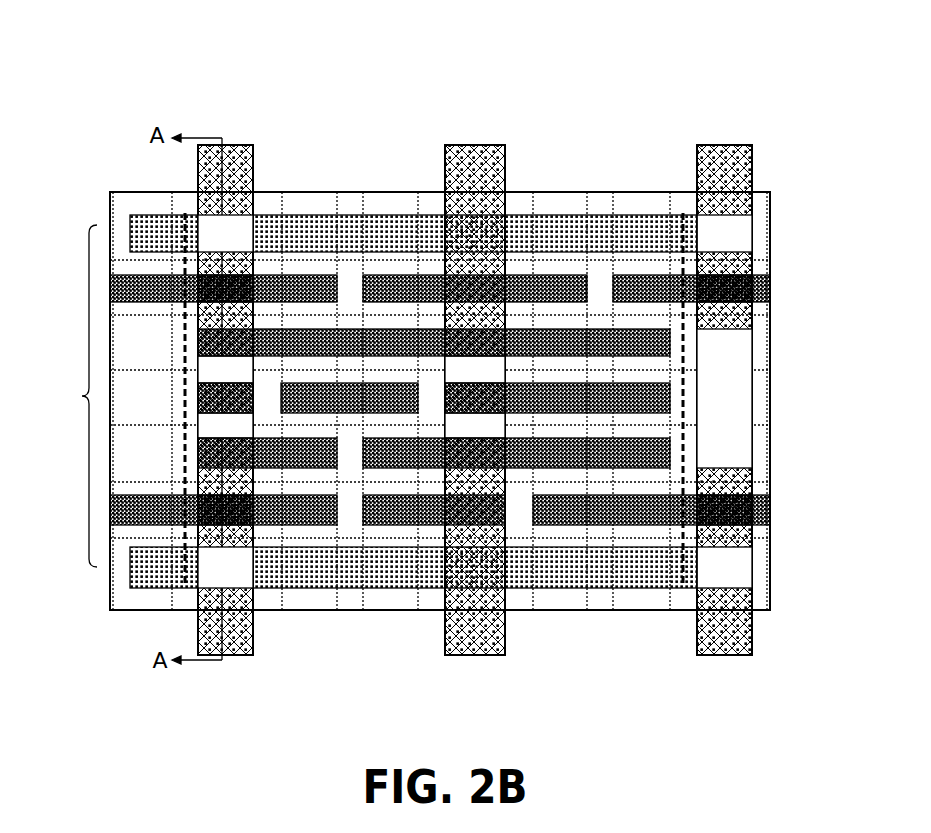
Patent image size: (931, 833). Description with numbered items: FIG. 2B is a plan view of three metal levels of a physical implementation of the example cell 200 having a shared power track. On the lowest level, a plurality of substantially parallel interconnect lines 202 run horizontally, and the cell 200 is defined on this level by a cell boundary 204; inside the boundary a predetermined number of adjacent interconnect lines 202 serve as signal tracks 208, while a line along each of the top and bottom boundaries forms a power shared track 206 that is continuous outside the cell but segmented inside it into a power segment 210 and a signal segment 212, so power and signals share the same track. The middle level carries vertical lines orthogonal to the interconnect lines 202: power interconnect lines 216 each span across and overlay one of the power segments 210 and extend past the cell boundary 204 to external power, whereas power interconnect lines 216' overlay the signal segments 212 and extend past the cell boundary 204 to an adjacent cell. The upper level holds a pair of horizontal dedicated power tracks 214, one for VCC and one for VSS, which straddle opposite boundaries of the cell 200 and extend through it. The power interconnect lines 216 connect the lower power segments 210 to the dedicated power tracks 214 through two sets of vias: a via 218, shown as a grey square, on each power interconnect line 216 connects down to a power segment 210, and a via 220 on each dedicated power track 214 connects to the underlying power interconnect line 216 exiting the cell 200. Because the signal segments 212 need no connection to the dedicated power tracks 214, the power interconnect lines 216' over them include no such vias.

The cell 200 is at (425, 32).
The interconnect lines 202 is at (66, 396).
The cell boundary 204 is at (683, 270).
The power shared track 206 is at (777, 275).
The signal tracks 208 is at (777, 483).
The power segment 210 is at (270, 273).
The signal segment 212 is at (398, 273).
The dedicated power tracks 214 is at (777, 215).
The power interconnect lines 216 is at (475, 399).
The power interconnect lines 216' is at (475, 399).
The via 218 is at (197, 272).
The via 220 is at (201, 233).